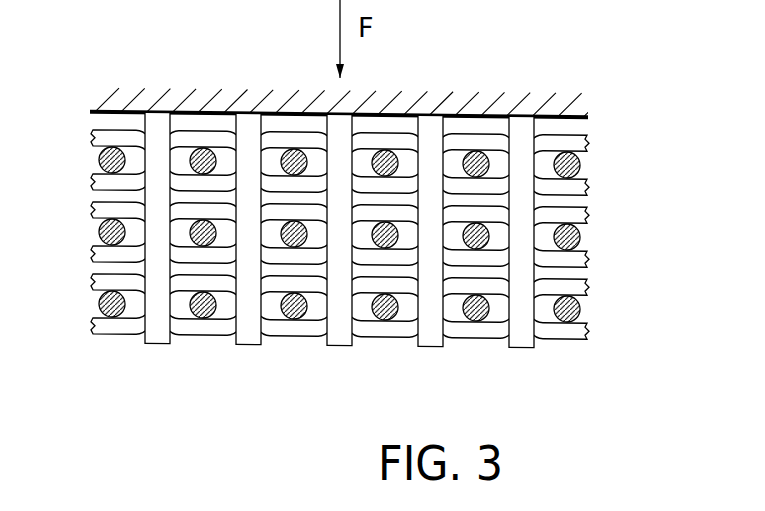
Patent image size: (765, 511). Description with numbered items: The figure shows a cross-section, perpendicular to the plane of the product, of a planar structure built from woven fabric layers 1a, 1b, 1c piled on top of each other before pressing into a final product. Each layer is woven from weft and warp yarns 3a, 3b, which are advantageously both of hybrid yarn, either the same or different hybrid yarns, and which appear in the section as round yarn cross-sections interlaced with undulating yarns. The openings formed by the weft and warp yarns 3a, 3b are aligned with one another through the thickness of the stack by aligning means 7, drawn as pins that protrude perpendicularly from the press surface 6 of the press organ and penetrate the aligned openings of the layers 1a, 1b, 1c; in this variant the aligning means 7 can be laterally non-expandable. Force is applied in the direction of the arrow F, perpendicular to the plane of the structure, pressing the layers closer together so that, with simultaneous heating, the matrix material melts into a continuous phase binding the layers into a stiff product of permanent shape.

The press surface 6 is at (568, 118).
The layer 1a is at (623, 171).
The layer 1b is at (623, 240).
The layer 1c is at (392, 340).
The weft yarn 3a is at (573, 312).
The warp yarn 3b is at (561, 334).
The aligning means 7 is at (338, 358).